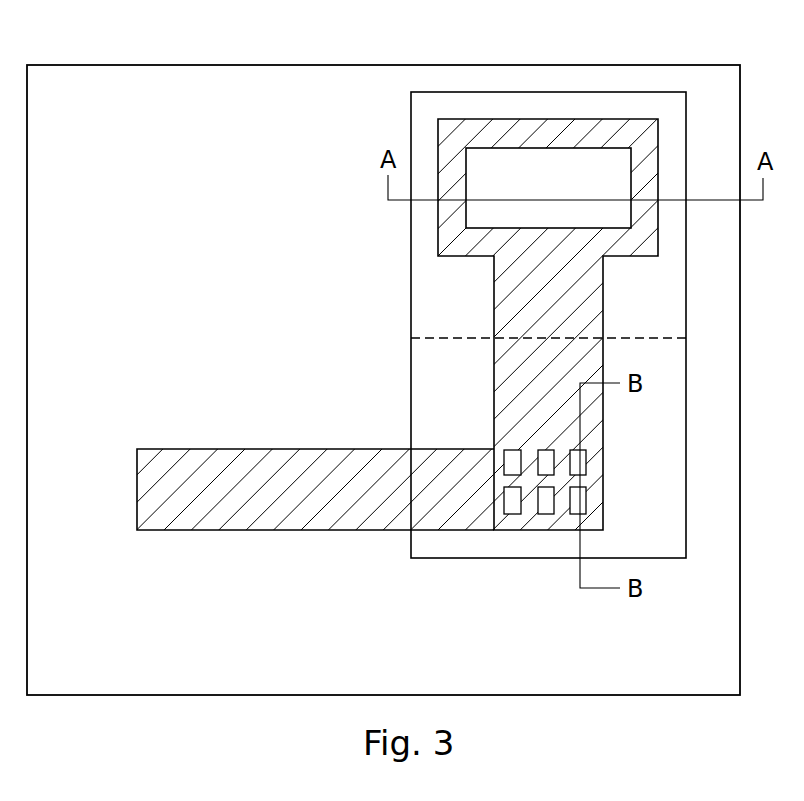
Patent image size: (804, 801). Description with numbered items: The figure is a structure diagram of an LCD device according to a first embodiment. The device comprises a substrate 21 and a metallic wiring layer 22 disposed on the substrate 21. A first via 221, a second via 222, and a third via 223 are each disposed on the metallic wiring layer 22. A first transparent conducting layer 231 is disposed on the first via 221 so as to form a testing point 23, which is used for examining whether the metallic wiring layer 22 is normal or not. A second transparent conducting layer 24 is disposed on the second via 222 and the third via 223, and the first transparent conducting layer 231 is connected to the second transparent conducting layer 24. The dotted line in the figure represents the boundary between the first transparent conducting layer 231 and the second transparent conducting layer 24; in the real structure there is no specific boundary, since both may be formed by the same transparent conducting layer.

The substrate 21 is at (685, 65).
The metallic wiring layer 22 is at (272, 449).
The testing point 23 is at (313, 98).
The first via 221 is at (482, 168).
The first transparent conducting layer 231 is at (410, 232).
The second transparent conducting layer 24 is at (410, 363).
The second via 222 is at (580, 463).
The third via 223 is at (580, 502).